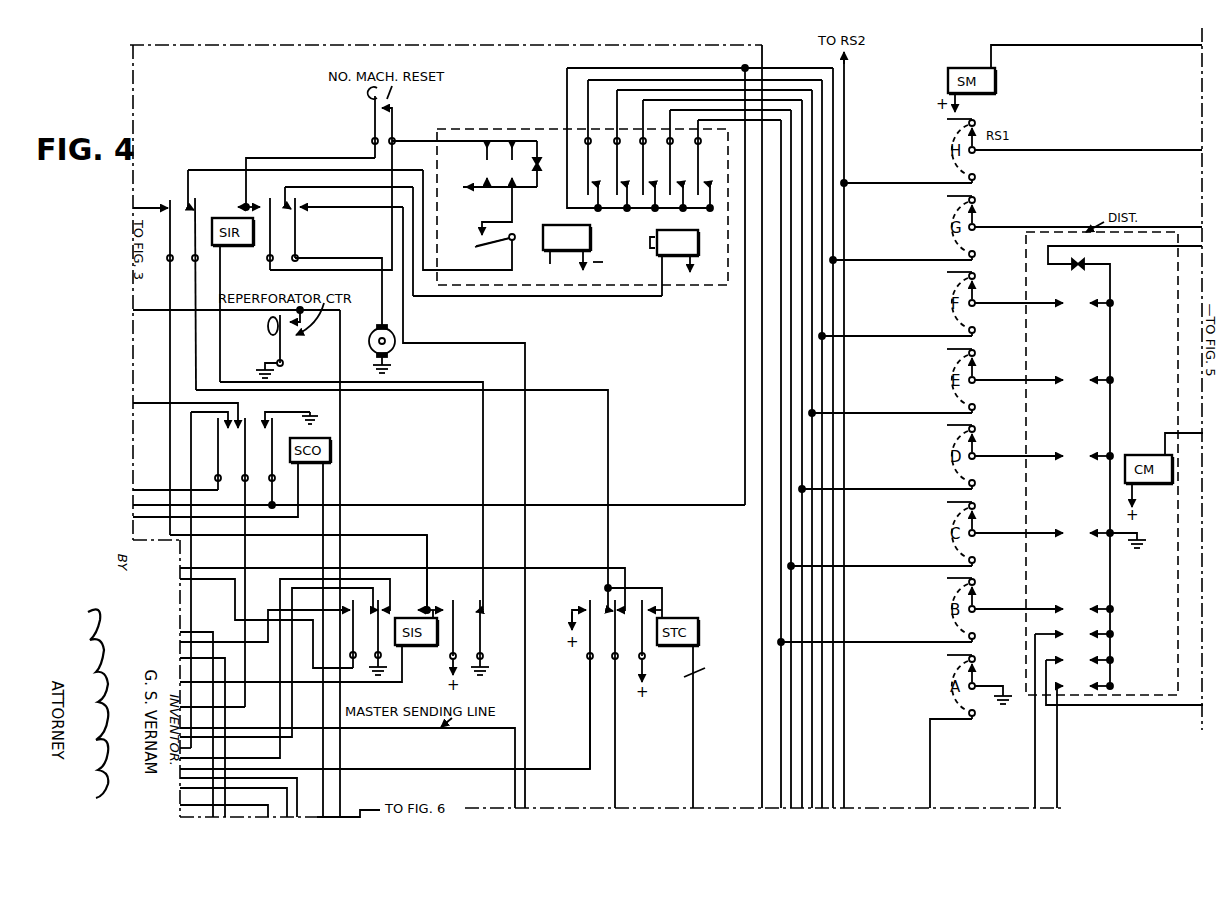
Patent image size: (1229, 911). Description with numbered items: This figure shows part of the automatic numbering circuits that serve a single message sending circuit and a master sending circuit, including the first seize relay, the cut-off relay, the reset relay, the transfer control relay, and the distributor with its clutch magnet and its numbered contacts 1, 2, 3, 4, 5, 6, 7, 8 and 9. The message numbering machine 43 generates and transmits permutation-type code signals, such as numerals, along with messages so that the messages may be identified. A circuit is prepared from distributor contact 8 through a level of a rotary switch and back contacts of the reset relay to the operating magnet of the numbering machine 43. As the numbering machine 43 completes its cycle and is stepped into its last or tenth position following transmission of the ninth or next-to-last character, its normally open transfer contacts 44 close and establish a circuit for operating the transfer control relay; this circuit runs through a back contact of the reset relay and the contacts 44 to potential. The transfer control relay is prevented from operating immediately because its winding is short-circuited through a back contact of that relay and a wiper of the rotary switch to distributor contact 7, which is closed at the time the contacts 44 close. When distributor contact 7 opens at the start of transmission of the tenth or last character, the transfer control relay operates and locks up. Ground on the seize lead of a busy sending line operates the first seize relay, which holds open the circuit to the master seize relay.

The message numbering machine 43 is at (441, 129).
The transfer contacts 44 is at (480, 233).
The distributor segment 1 is at (1044, 305).
The distributor segment 2 is at (1044, 381).
The distributor segment 3 is at (1044, 457).
The distributor segment 4 is at (1044, 534).
The distributor segment 5 is at (1044, 610).
The distributor segment 6 is at (1078, 277).
The distributor contact No. 7 is at (1074, 717).
The distributor contact No. 8 is at (1124, 678).
The distributor segment 9 is at (1085, 743).